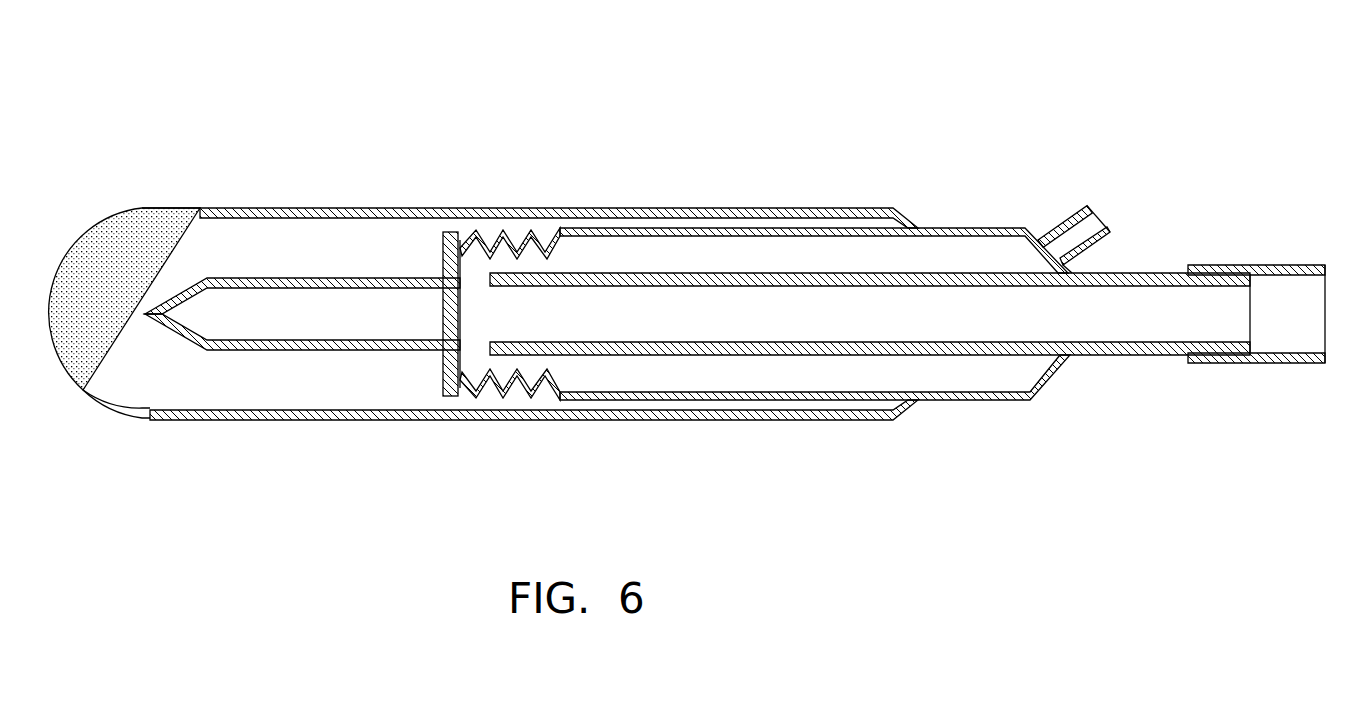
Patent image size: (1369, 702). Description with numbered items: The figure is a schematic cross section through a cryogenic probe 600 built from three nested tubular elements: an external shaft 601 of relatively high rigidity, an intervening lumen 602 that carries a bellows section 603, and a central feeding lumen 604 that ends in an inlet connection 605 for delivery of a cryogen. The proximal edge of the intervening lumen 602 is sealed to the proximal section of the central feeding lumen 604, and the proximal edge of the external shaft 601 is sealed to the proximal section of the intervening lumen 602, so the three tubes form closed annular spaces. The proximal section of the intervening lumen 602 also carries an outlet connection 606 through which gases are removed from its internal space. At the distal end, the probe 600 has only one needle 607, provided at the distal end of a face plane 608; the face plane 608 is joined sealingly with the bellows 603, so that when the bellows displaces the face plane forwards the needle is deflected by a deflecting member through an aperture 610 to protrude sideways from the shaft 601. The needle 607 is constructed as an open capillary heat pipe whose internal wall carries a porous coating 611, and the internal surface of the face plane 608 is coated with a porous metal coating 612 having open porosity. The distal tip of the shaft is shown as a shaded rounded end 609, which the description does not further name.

The probe 600 is at (660, 163).
The external shaft 601 is at (743, 213).
The intervening lumen 602 is at (690, 401).
The bellows section 603 is at (502, 392).
The central feeding lumen 604 is at (870, 273).
The inlet connection 605 is at (1272, 260).
The outlet connection 606 is at (1072, 212).
The needle 607 is at (252, 288).
The face plane 608 is at (443, 238).
The distal dome tip 609 is at (80, 233).
The aperture 610 is at (112, 413).
The porous coating 611 is at (277, 350).
The porous metal coating 612 is at (462, 248).